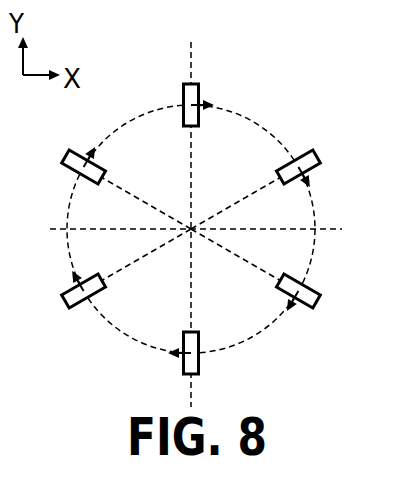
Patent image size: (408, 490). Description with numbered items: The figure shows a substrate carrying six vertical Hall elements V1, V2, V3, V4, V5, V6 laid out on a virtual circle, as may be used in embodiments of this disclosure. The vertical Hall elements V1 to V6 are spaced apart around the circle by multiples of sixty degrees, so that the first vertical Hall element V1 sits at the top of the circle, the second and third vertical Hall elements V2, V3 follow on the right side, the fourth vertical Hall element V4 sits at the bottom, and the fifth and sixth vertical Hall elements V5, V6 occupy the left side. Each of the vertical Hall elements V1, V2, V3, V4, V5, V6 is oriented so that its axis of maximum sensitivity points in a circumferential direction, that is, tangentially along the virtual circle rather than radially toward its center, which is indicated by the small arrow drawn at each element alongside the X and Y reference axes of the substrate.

The vertical Hall element V1 is at (181, 95).
The vertical Hall element V2 is at (317, 178).
The vertical Hall element V3 is at (295, 314).
The vertical Hall element V4 is at (204, 368).
The vertical Hall element V5 is at (74, 304).
The vertical Hall element V6 is at (73, 166).